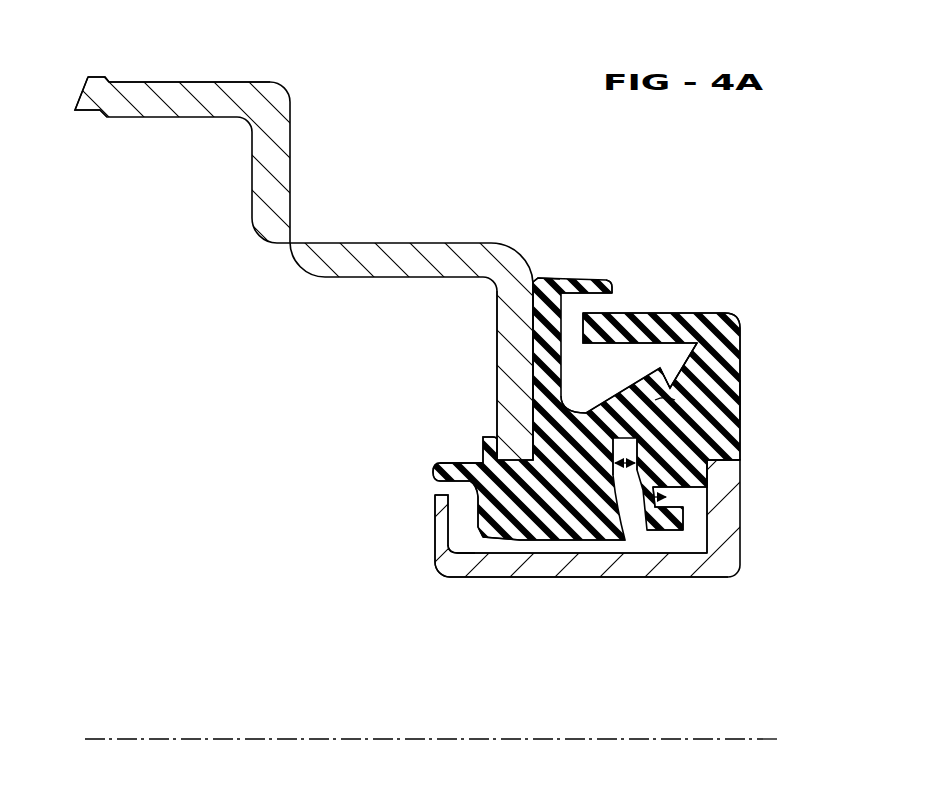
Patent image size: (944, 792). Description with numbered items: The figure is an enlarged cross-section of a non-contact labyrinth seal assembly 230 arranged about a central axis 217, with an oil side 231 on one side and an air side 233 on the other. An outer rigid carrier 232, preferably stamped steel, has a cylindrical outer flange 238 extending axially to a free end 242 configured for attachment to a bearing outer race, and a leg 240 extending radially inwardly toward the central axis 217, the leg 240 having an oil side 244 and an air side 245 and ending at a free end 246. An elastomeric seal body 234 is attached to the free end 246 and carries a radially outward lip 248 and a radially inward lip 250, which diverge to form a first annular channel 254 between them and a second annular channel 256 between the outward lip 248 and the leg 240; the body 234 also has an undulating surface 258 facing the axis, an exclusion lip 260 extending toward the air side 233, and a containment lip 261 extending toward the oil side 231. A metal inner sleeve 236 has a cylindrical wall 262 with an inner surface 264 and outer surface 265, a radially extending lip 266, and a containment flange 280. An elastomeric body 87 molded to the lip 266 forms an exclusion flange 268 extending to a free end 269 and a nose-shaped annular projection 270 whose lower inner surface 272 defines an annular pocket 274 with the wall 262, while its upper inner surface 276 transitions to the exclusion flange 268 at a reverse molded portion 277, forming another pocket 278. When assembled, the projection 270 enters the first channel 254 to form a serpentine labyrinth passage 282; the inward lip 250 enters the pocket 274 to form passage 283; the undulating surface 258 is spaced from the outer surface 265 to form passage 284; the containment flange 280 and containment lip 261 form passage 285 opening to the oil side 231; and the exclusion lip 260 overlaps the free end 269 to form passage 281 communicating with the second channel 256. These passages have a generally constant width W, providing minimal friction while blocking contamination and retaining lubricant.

The central axis 217 is at (240, 738).
The non-contact labyrinth seal assembly 230 is at (776, 285).
The oil side 231 is at (260, 417).
The outer rigid carrier 232 is at (161, 147).
The air side 233 is at (864, 484).
The seal body 234 is at (440, 466).
The metal inner sleeve 236 is at (420, 544).
The outer flange 238 is at (165, 82).
The leg 240 is at (497, 383).
The free end 242 is at (80, 92).
The oil side of leg 244 is at (497, 424).
The air side of leg 245 is at (545, 279).
The free end of leg 246 is at (488, 455).
The radially outward lip 248 is at (680, 356).
The radially inward lip 250 is at (701, 502).
The first annular channel 254 is at (638, 450).
The second annular channel 256 is at (620, 311).
The undulating surface 258 is at (590, 548).
The exclusion lip 260 is at (591, 282).
The containment lip 261 is at (434, 459).
The cylindrical wall 262 is at (483, 579).
The inner surface 264 is at (545, 580).
The outer surface 265 is at (477, 557).
The lip 266 is at (745, 507).
The exclusion flange 268 is at (604, 357).
The free end 269 is at (585, 392).
The annular projection 270 is at (661, 404).
The lower inner surface 272 is at (692, 493).
The annular pocket 274 is at (703, 547).
The upper inner surface 276 is at (741, 400).
The reverse molded portion 277 is at (734, 320).
The annular pocket 278 is at (661, 357).
The containment flange 280 is at (432, 512).
The non-contact labyrinth passage 281 is at (614, 292).
The non-contact labyrinth passage 282 is at (675, 384).
The non-contact labyrinth passage 283 is at (668, 536).
The non-contact labyrinth passage 284 is at (686, 546).
The non-contact labyrinth passage 285 is at (464, 505).
The elastomeric body 87 is at (810, 396).
The width W is at (641, 480).